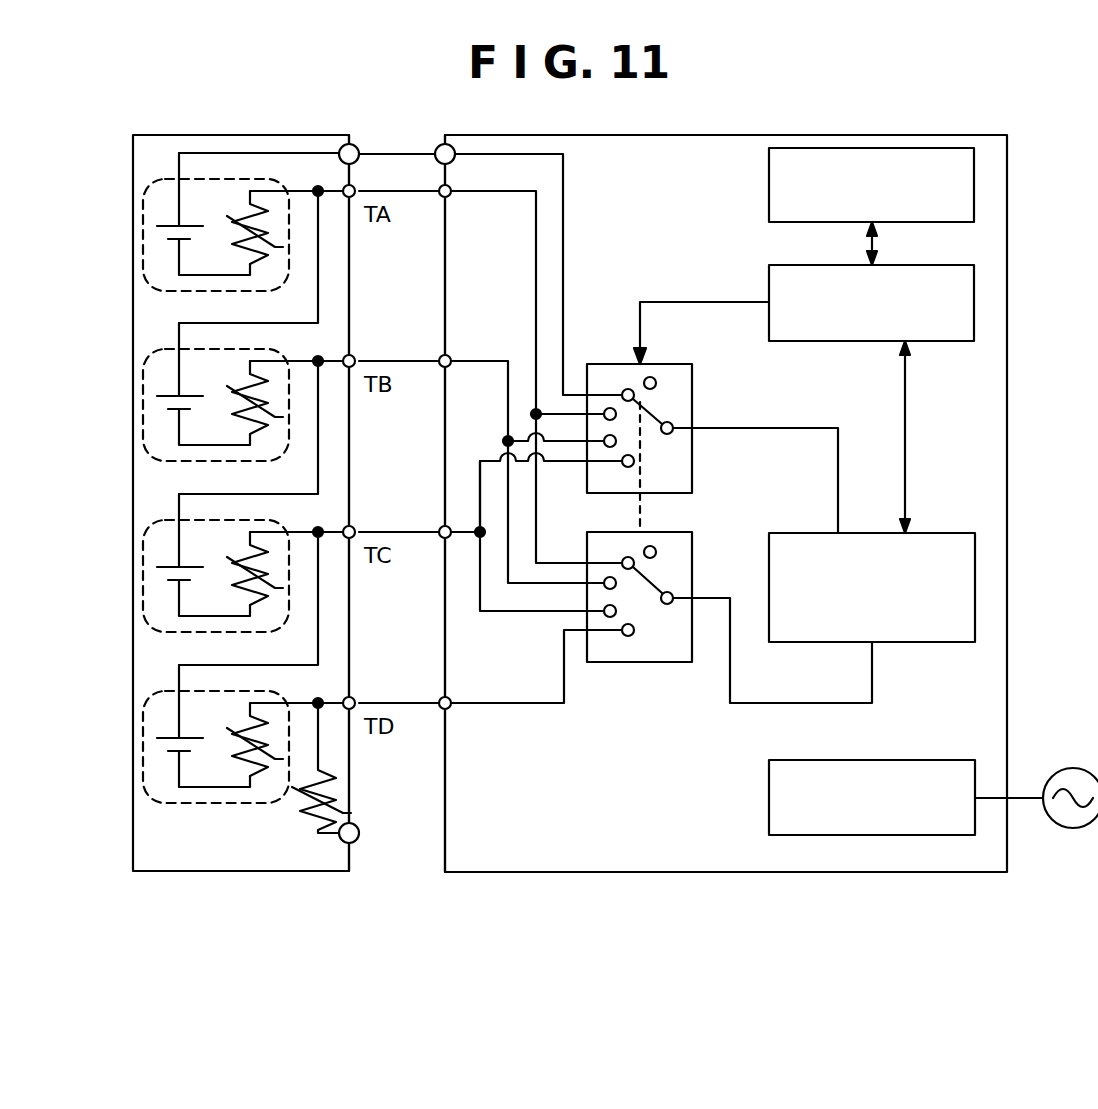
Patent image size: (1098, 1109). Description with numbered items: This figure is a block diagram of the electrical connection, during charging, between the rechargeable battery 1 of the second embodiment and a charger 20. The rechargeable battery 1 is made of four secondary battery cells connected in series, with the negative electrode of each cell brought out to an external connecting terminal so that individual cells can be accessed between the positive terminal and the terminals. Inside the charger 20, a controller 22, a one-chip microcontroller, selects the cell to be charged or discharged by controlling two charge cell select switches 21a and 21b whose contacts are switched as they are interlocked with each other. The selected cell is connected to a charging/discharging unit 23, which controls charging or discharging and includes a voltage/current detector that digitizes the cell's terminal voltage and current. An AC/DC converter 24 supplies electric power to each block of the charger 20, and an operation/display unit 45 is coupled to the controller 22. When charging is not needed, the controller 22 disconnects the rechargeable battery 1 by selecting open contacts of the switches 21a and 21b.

The rechargeable battery 1 is at (242, 134).
The charger 20 is at (942, 135).
The charge cell select switch 21a is at (693, 395).
The charge cell select switch 21b is at (640, 663).
The controller 22 is at (768, 284).
The charging/discharging unit 23 is at (768, 565).
The AC/DC converter 24 is at (768, 798).
The operation/display unit 45 is at (768, 185).